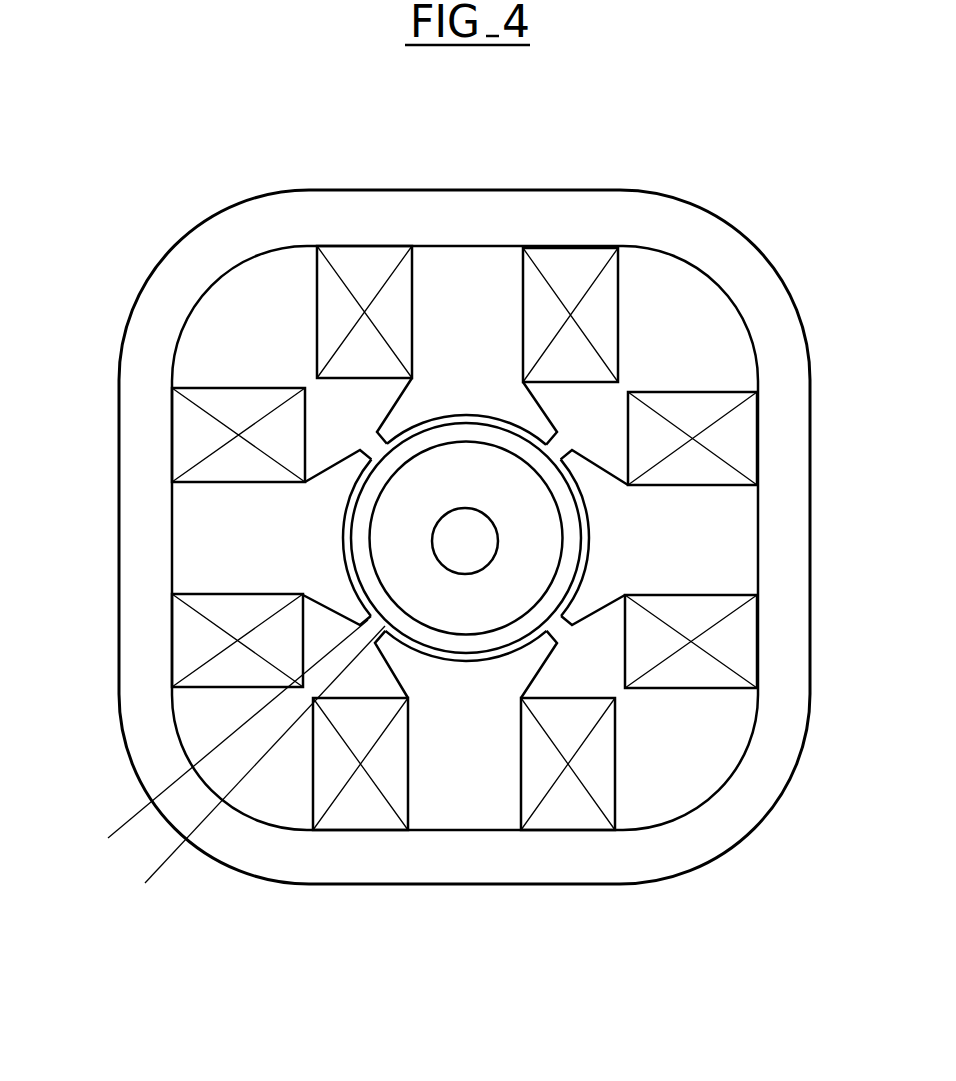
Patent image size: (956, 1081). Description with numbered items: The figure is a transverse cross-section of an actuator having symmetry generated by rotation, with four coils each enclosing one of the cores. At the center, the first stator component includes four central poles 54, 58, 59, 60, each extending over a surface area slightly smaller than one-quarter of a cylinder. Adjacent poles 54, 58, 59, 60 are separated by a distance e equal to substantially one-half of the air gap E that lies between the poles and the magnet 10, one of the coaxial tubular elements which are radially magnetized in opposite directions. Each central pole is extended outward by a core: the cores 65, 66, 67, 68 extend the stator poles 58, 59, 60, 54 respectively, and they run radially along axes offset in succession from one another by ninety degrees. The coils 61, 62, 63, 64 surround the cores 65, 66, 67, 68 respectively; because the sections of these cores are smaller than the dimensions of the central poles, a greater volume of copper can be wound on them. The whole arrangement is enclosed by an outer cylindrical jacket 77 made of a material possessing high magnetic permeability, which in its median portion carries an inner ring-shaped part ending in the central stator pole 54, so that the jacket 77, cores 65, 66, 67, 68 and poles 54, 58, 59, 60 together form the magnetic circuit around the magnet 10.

The magnet 10 is at (477, 587).
The central pole 54 is at (461, 537).
The central pole 58 is at (475, 412).
The central pole 59 is at (592, 538).
The central pole 60 is at (473, 664).
The coil 61 is at (607, 296).
The coil 62 is at (716, 420).
The coil 63 is at (603, 767).
The coil 64 is at (208, 433).
The core 65 is at (447, 300).
The core 66 is at (713, 570).
The core 67 is at (427, 765).
The core 68 is at (210, 560).
The outer cylindrical jacket 77 is at (217, 240).
The air gap E is at (312, 560).
The distance e is at (118, 838).